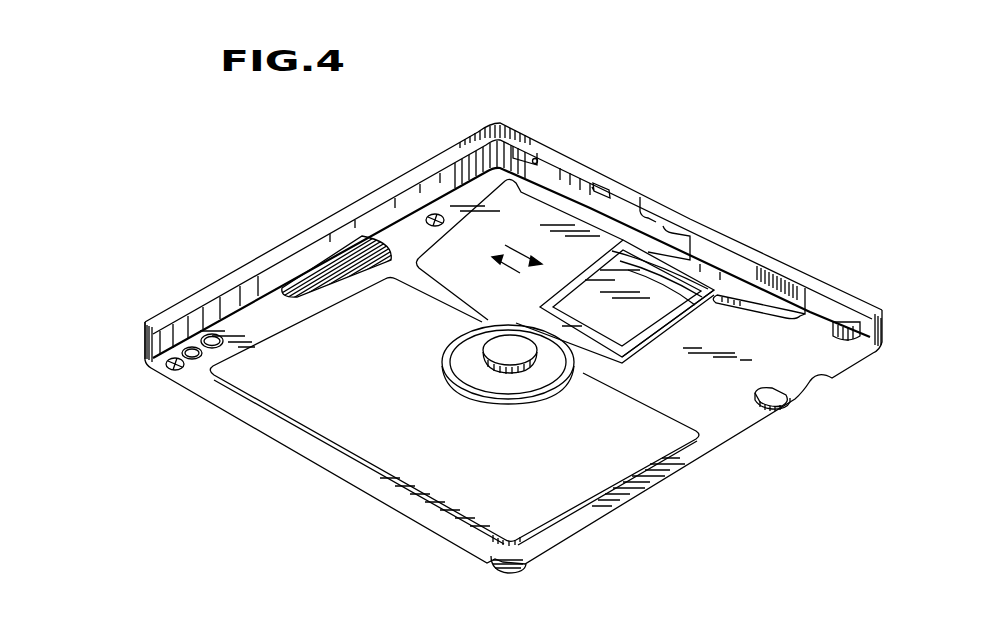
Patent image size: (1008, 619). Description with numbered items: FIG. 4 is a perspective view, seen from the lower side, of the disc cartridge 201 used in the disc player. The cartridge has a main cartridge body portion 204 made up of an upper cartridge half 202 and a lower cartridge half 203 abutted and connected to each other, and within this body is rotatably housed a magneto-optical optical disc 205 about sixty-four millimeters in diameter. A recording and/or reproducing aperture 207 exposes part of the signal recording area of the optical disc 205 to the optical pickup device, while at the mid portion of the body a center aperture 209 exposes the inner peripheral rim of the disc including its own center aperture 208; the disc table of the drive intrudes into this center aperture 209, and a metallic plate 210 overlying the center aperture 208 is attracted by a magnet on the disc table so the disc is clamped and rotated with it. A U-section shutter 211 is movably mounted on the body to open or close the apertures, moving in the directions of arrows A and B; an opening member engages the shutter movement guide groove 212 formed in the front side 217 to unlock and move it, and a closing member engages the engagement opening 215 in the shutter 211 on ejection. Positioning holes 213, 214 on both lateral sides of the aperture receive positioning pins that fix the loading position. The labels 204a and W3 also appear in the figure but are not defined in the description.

The disc cartridge 201 is at (299, 227).
The upper cartridge half 202 is at (143, 330).
The lower cartridge half 203 is at (143, 357).
The main cartridge body portion 204 is at (175, 275).
The bottom surface of cartridge case 204a is at (718, 454).
The optical disc 205 is at (627, 282).
The recording and/or reproducing aperture 207 is at (651, 312).
The center aperture 208 is at (490, 367).
The center aperture 209 is at (501, 396).
The metallic plate 210 is at (514, 354).
The shutter 211 is at (563, 172).
The shutter movement guide groove 212 is at (750, 262).
The positioning hole 213 is at (430, 215).
The positioning hole 214 is at (778, 408).
The engagement opening 215 is at (606, 186).
The front side 217 is at (828, 308).
The window width W3 is at (638, 330).